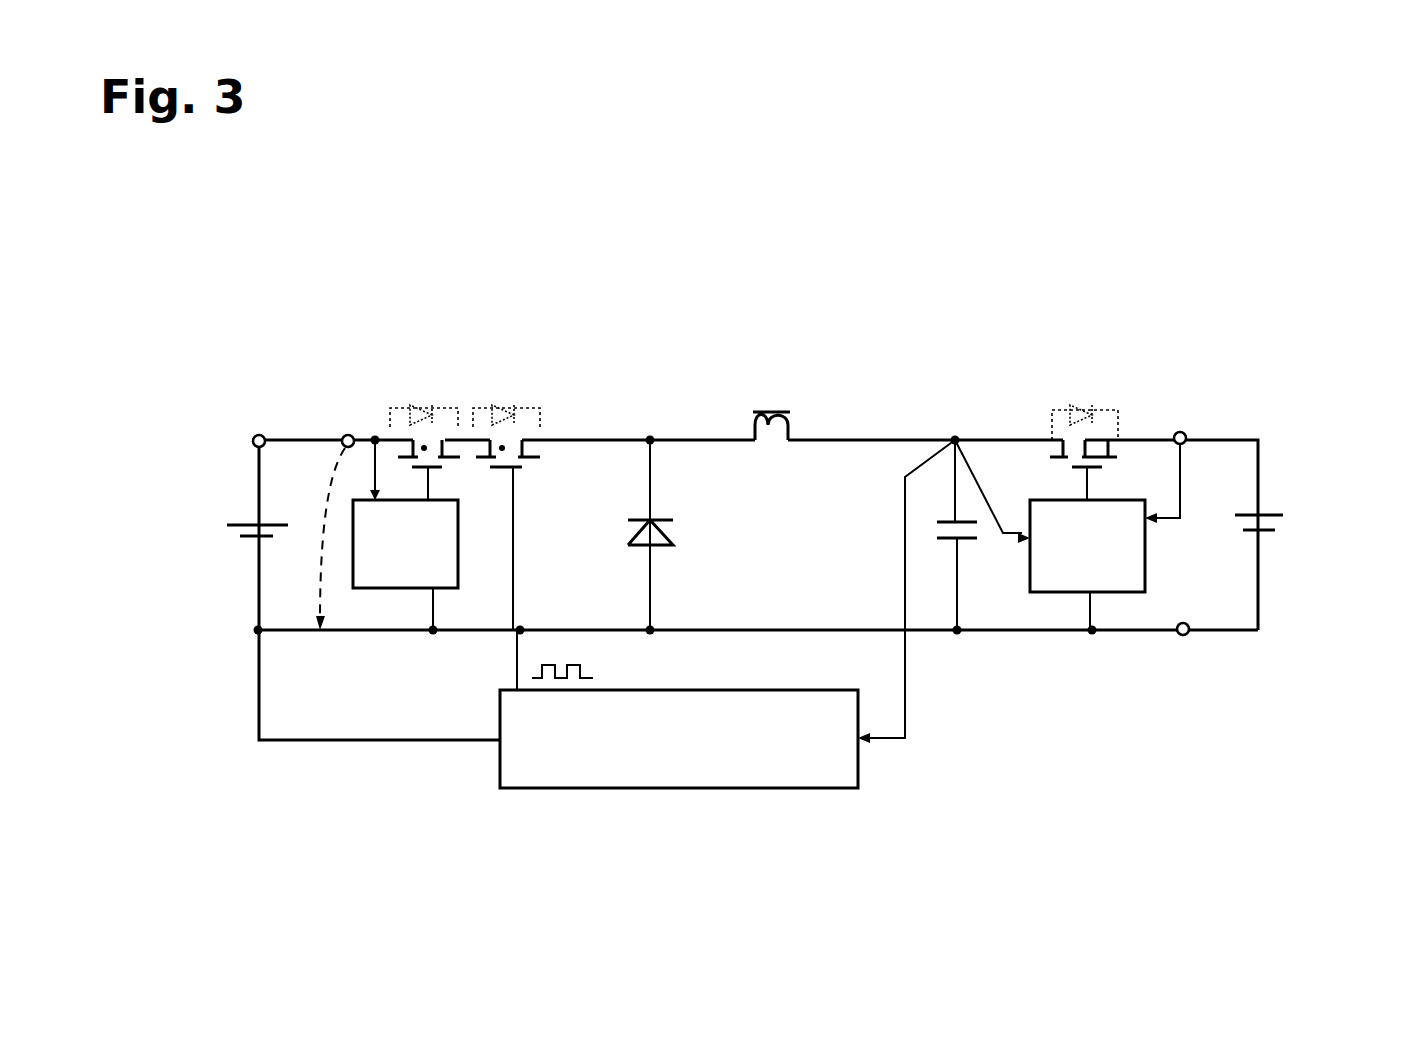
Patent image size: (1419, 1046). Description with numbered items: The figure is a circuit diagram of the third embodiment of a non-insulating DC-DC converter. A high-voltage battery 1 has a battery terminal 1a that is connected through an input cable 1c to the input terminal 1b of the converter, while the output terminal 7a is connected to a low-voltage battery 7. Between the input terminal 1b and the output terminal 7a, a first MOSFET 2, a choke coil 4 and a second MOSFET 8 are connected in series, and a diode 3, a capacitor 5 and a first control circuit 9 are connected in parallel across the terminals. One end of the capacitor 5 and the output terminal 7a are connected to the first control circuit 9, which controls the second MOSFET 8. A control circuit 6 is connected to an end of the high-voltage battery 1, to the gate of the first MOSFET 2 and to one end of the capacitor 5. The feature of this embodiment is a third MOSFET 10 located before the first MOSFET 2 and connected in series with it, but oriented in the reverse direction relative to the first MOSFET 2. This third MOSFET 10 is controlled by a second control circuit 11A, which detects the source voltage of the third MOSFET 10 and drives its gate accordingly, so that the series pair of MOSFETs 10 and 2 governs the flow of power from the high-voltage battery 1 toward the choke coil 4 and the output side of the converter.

The high-voltage battery 1 is at (233, 518).
The battery terminal 1a is at (253, 437).
The input terminal 1b is at (350, 435).
The input cable 1c is at (300, 438).
The first MOSFET 2 is at (512, 387).
The diode 3 is at (674, 533).
The choke coil 4 is at (772, 398).
The capacitor 5 is at (965, 540).
The control circuit 6 is at (708, 790).
The low-voltage battery 7 is at (1270, 510).
The output terminal 7a is at (1178, 432).
The second MOSFET 8 is at (1097, 382).
The first control circuit 9 is at (1147, 560).
The third MOSFET 10 is at (430, 388).
The second control circuit 11A is at (425, 592).